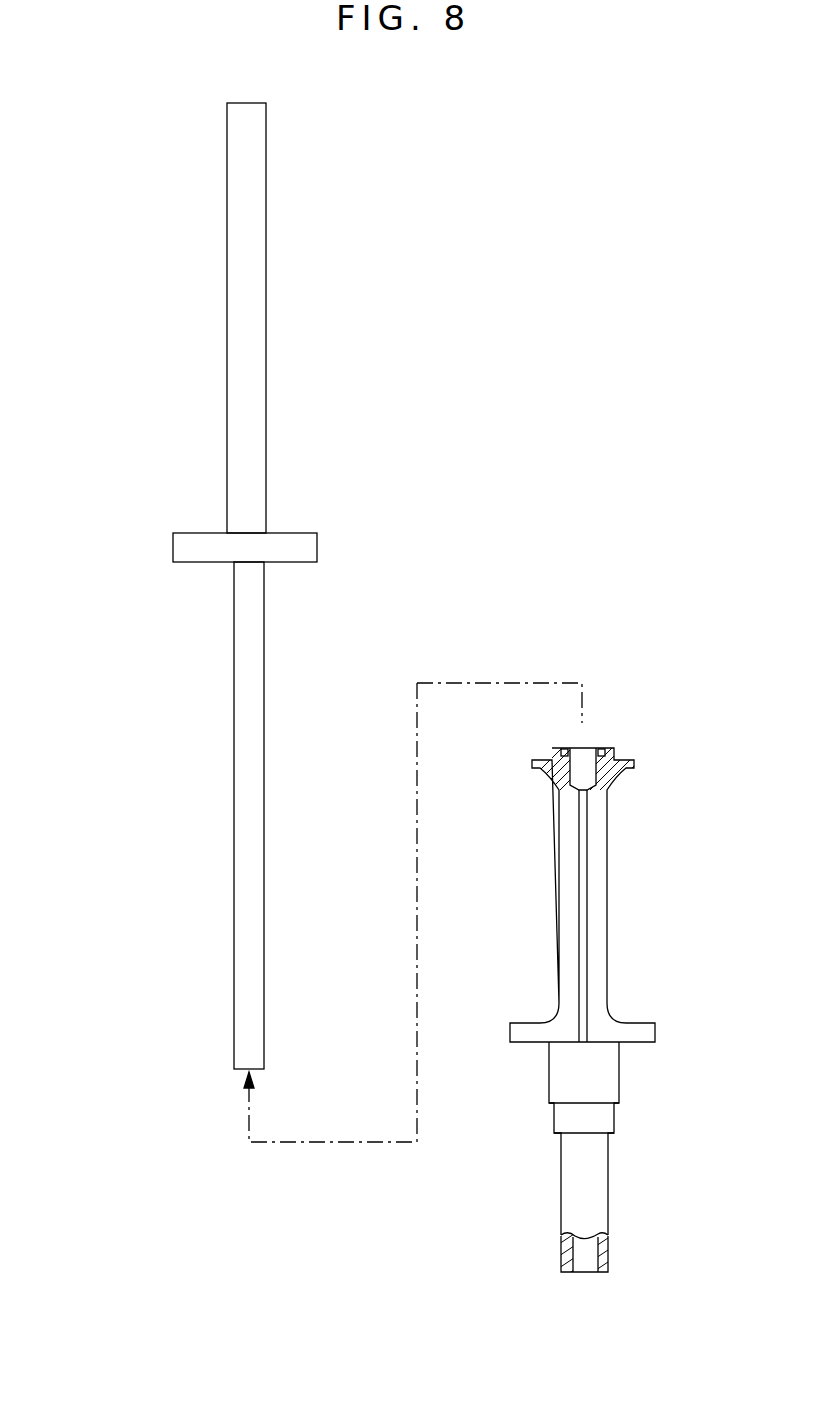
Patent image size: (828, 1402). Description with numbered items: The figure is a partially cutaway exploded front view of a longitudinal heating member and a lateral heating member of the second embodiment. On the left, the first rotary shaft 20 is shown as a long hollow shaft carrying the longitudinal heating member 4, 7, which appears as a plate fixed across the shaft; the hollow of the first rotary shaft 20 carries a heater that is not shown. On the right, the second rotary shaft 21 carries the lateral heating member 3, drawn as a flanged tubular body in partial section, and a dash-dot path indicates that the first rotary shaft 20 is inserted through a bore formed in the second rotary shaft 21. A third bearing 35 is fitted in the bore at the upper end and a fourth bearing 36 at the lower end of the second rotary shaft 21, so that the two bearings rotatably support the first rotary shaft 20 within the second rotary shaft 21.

The first rotary shaft 20 is at (267, 437).
The longitudinal heating member 4 is at (193, 537).
The plate 7 is at (180, 548).
The lateral heating member 3 is at (595, 864).
The third bearing 35 is at (600, 748).
The second rotary shaft 21 is at (608, 1082).
The fourth bearing 36 is at (602, 1275).